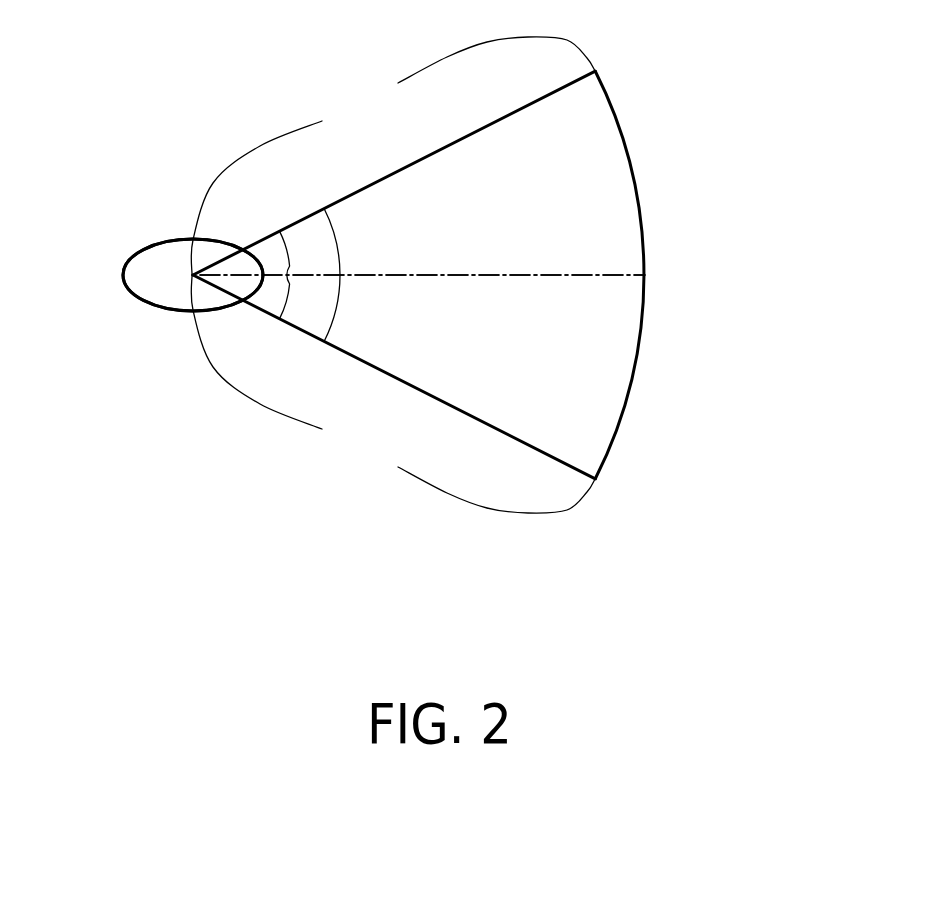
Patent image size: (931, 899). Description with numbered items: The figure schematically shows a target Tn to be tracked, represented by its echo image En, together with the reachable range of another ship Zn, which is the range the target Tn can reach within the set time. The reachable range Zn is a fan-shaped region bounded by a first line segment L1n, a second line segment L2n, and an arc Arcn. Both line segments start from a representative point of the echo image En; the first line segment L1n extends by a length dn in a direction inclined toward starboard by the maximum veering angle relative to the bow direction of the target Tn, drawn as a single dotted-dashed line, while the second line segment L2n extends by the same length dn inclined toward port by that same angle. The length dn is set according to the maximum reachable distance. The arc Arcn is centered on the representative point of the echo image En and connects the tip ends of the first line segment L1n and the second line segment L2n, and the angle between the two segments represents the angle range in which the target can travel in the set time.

The target Tn is at (177, 238).
The echo image En is at (193, 275).
The first line segment L1n is at (517, 437).
The second line segment L2n is at (517, 110).
The arc Arcn is at (637, 176).
The reachable range of another ship Zn is at (612, 262).
The length dn is at (393, 275).